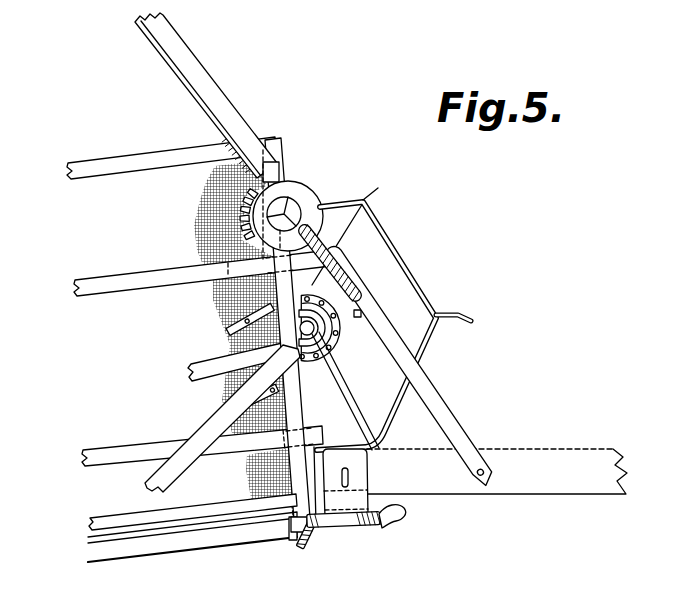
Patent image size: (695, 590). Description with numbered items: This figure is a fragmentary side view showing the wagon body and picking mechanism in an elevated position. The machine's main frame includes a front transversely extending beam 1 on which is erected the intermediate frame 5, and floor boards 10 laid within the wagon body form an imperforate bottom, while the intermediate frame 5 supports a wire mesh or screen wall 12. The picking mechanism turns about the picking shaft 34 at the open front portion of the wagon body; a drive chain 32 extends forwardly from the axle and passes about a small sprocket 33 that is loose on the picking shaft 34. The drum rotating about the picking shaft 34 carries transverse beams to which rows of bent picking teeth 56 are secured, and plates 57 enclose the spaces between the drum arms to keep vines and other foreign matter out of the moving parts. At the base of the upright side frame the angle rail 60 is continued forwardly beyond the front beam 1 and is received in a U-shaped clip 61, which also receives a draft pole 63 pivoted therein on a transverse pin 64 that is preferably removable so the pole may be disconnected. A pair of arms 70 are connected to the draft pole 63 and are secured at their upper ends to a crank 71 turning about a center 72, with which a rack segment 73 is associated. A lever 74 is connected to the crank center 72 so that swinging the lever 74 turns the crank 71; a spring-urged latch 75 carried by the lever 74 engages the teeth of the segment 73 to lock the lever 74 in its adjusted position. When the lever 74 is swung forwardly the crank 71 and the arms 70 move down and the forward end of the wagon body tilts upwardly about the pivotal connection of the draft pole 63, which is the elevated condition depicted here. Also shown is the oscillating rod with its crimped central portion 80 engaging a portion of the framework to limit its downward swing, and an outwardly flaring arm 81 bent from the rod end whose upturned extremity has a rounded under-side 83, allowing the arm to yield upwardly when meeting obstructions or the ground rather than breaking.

The front transversely extending beam 1 is at (292, 534).
The intermediate frame 5 is at (68, 164).
The floor boards 10 is at (88, 545).
The wire mesh or screen wall 12 is at (195, 226).
The drive chain 32 is at (213, 331).
The small sprocket 33 is at (334, 342).
The picking shaft 34 is at (307, 328).
The bent picking teeth 56 is at (367, 200).
The plates 57 is at (384, 222).
The angle rail 60 is at (90, 520).
The U-shaped clip 61 is at (349, 529).
The draft pole 63 is at (570, 452).
The transverse pin 64 is at (352, 477).
The arms 70 is at (447, 421).
The crank 71 is at (342, 278).
The crank center 72 is at (306, 227).
The rack segment 73 is at (290, 184).
The lever 74 is at (228, 108).
The latch 75 is at (278, 166).
The crimped central portion 80 is at (302, 547).
The outwardly flaring arm 81 is at (321, 533).
The rounded under-side 83 is at (398, 521).